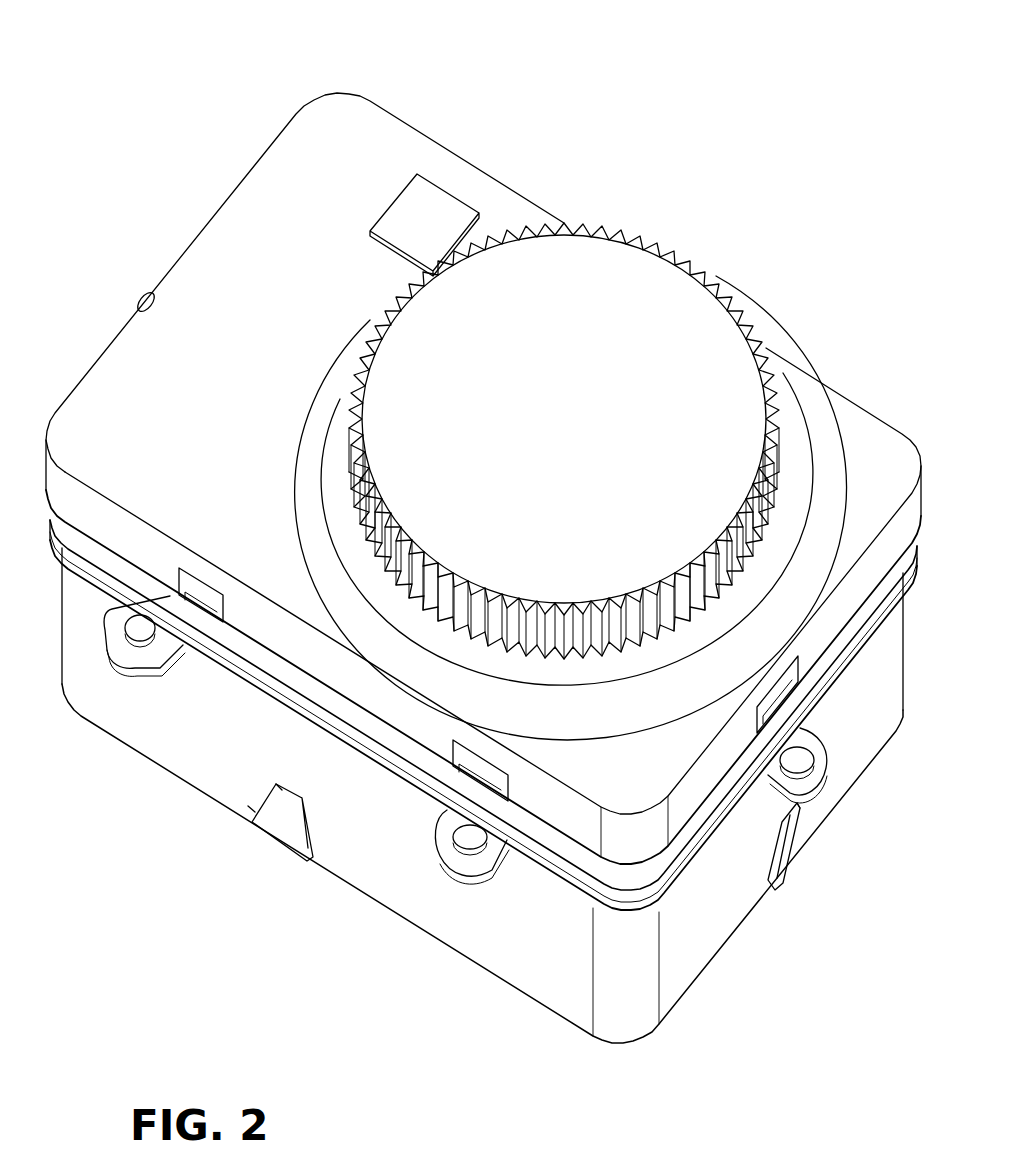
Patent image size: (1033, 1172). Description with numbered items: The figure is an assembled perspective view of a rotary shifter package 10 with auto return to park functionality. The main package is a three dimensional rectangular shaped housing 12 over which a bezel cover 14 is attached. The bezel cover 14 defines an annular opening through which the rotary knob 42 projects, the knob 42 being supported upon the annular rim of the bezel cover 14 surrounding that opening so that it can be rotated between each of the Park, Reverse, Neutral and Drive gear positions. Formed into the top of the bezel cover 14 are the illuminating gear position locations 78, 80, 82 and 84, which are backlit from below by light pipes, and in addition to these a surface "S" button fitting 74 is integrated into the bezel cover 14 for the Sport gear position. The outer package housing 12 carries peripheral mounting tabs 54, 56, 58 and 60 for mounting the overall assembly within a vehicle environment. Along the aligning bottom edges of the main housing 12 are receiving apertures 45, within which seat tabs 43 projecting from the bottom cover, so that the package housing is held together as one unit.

The rotary shifter package 10 is at (535, 100).
The housing 12 is at (97, 692).
The bezel cover 14 is at (130, 345).
The rotary knob 42 is at (658, 287).
The tabs 43 is at (296, 832).
The receiving apertures 45 is at (281, 792).
The peripheral mounting tab 54 is at (822, 770).
The peripheral mounting tab 56 is at (148, 298).
The peripheral mounting tab 58 is at (455, 878).
The peripheral mounting tab 60 is at (127, 650).
The "S" button fitting 74 is at (452, 190).
The illuminating gear position location 78 is at (135, 440).
The illuminating gear position location 80 is at (190, 300).
The illuminating gear position location 82 is at (262, 225).
The illuminating gear position location 84 is at (360, 160).